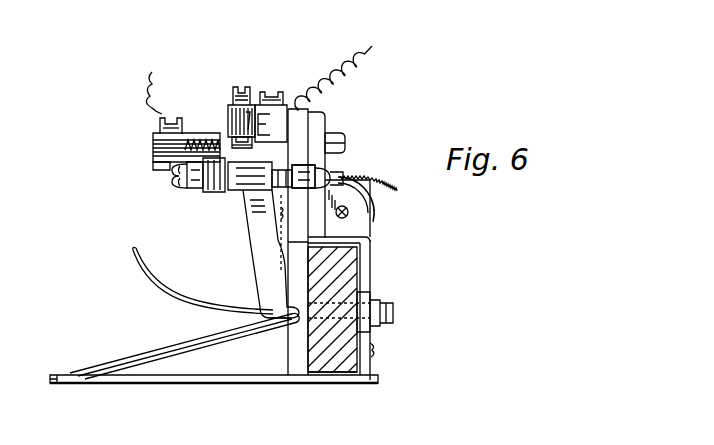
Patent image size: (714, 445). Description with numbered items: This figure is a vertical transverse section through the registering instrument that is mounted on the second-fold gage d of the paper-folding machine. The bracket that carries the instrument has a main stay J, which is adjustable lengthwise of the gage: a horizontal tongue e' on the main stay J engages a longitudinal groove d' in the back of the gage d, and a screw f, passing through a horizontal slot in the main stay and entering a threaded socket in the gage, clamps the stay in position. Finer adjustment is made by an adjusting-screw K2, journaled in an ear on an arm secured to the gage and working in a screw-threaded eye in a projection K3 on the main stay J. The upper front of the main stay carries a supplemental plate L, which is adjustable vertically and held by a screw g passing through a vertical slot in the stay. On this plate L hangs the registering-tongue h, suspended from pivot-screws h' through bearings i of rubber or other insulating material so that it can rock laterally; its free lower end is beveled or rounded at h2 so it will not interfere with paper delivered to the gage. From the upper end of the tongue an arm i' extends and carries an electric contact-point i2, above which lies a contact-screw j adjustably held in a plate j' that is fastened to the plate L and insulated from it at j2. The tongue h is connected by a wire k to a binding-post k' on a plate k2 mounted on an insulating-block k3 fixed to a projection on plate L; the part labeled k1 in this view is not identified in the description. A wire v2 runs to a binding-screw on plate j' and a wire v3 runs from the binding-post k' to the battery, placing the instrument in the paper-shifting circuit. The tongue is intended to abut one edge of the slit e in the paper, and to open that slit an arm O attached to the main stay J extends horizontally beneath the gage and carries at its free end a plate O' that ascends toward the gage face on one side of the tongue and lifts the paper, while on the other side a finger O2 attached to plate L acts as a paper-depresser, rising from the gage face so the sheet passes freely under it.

The arm O is at (214, 392).
The plate O' is at (184, 346).
The finger O2 is at (200, 308).
The registering-tongue h is at (271, 254).
The pivot-screws h' is at (204, 190).
The beveled or rounded lower end h2 is at (258, 300).
The main stay J is at (372, 242).
The gage d is at (332, 309).
The longitudinal groove d' is at (332, 352).
The horizontal tongue e' is at (359, 296).
The screw f is at (394, 316).
The projection K3 is at (371, 194).
The adjusting-screw K2 is at (349, 213).
The screw g is at (356, 134).
The bearings i is at (257, 191).
The arm i' is at (253, 132).
The electric contact-point i2 is at (299, 100).
The contact-screw j is at (235, 91).
The plate j' is at (242, 121).
The insulation j2 is at (271, 98).
The wire k is at (227, 130).
The binding-post k' is at (303, 162).
The screw k1 is at (170, 116).
The plate k2 is at (153, 137).
The insulating-block k3 is at (153, 154).
The slit e is at (197, 141).
The wire v2 is at (333, 78).
The wire v3 is at (162, 86).
The supplemental plate L is at (296, 112).